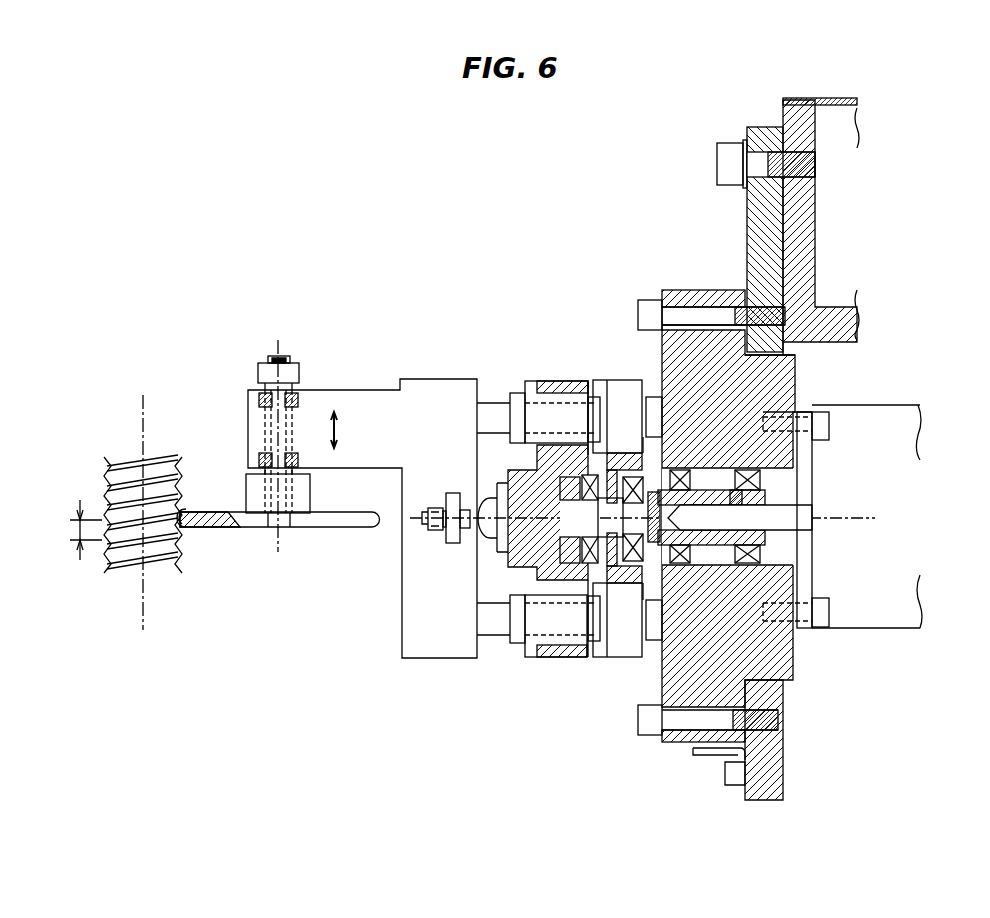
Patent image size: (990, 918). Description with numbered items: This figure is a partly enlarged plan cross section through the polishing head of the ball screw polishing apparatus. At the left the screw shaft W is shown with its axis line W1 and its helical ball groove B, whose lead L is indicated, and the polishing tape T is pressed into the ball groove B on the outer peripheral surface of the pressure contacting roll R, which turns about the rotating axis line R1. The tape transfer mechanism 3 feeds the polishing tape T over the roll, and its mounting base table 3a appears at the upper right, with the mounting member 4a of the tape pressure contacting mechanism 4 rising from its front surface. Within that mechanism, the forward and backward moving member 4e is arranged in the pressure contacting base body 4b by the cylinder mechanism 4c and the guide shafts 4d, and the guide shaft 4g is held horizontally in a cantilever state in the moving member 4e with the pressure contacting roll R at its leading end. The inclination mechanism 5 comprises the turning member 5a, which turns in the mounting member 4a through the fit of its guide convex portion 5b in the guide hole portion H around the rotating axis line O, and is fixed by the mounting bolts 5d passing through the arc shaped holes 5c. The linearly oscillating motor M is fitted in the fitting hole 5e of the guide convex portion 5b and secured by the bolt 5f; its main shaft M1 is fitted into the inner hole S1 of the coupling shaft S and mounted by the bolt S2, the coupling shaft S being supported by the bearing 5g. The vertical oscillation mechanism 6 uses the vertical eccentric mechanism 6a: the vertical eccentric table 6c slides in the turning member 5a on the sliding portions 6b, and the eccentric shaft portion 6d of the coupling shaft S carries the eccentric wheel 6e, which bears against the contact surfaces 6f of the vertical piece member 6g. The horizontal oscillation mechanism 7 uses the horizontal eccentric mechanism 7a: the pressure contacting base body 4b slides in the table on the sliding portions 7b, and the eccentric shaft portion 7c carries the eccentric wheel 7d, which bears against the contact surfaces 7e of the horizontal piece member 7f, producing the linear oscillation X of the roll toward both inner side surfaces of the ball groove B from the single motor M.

The screw shaft W is at (130, 470).
The axis line W1 is at (140, 592).
The lead L is at (76, 533).
The tape transfer mechanism 3 is at (278, 525).
The mounting base table 3a is at (840, 140).
The polishing tape T is at (182, 527).
The ball groove B is at (186, 510).
The pressure contacting roll R is at (251, 522).
The rotating axis line R1 is at (281, 538).
The tape pressure contacting mechanism 4 is at (503, 670).
The mounting member 4a is at (760, 240).
The pressure contacting base body 4b is at (508, 566).
The cylinder mechanism 4c is at (423, 552).
The guide shaft 4d is at (498, 412).
The forward and backward moving member 4e is at (423, 395).
The guide shaft 4g is at (267, 418).
The linear oscillation X is at (340, 432).
The inclination mechanism 5 is at (655, 273).
The turning member 5a is at (723, 684).
The guide convex portion 5b is at (768, 382).
The arc shaped hole 5c is at (718, 305).
The mounting bolt 5d is at (681, 318).
The fitting hole 5e is at (790, 415).
The bolt 5f is at (830, 425).
The bearing 5g is at (655, 560).
The vertical oscillation mechanism 6 is at (656, 370).
The vertical eccentric mechanism 6a is at (638, 367).
The sliding portion 6b is at (673, 365).
The vertical eccentric table 6c is at (640, 428).
The eccentric shaft portion 6d is at (624, 584).
The eccentric wheel 6e is at (636, 552).
The contact surface 6f is at (630, 452).
The vertical piece member 6g is at (632, 585).
The horizontal oscillation mechanism 7 is at (595, 378).
The horizontal eccentric mechanism 7a is at (595, 362).
The sliding portion 7b is at (596, 420).
The eccentric shaft portion 7c is at (583, 556).
The eccentric wheel 7d is at (541, 400).
The contact surface 7e is at (578, 478).
The horizontal piece member 7f is at (567, 556).
The guide hole portion H is at (786, 347).
The coupling shaft S is at (763, 540).
The inner hole S1 is at (763, 535).
The bolt S2 is at (730, 495).
The linearly oscillating motor M is at (910, 594).
The main shaft M1 is at (780, 513).
The rotating axis line O is at (857, 518).